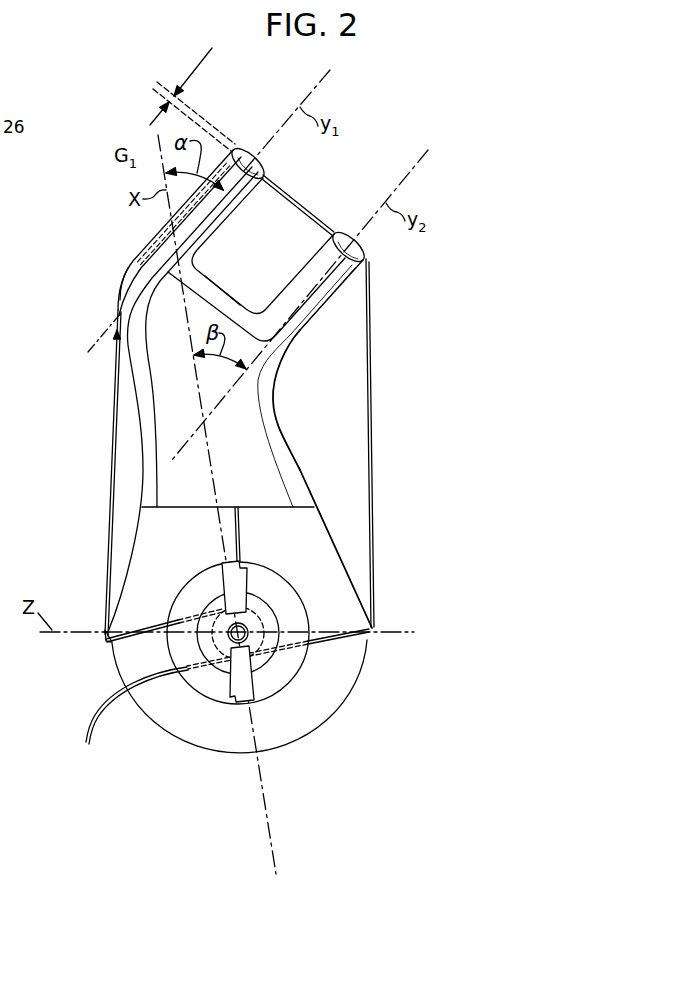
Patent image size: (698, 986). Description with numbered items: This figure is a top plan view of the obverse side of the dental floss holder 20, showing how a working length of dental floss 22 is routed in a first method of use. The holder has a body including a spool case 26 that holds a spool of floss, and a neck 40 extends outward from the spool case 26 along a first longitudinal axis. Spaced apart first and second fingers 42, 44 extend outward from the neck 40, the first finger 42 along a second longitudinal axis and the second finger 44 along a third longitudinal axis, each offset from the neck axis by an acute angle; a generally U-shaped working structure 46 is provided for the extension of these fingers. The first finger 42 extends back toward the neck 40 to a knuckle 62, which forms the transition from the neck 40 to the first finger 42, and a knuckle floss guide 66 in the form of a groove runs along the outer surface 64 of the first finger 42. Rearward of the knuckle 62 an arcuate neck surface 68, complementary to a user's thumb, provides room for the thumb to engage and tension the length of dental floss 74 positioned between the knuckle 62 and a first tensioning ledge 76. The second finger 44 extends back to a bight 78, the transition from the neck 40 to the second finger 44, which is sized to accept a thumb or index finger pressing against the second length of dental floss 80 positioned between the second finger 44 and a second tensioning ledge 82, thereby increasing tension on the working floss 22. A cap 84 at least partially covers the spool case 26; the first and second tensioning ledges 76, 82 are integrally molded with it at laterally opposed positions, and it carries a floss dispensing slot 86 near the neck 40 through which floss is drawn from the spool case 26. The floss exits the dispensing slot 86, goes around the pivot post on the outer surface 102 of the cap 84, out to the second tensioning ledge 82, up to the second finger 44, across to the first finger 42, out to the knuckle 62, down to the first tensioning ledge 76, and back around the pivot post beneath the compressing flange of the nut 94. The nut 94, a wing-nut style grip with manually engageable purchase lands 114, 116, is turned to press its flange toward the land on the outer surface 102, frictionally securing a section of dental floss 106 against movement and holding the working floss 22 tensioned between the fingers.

The dental floss holder 20 is at (70, 415).
The dental floss 22 is at (287, 193).
The spool case 26 is at (197, 755).
The neck 40 is at (181, 344).
The first finger 42 is at (226, 227).
The second finger 44 is at (333, 293).
The U-shaped working structure 46 is at (225, 292).
The knuckle 62 is at (117, 306).
The outer surface of first finger 64 is at (163, 238).
The knuckle floss guide 66 is at (148, 265).
The arcuate neck surface 68 is at (137, 437).
The length of dental floss 74 is at (111, 468).
The first tensioning ledge 76 is at (103, 642).
The bight 78 is at (273, 390).
The second length of dental floss 80 is at (369, 447).
The second tensioning ledge 82 is at (372, 636).
The cap 84 is at (337, 712).
The floss dispensing slot 86 is at (260, 504).
The nut 94 is at (215, 682).
The outer surface of cap 102 is at (341, 692).
The section of dental floss 106 is at (265, 613).
The purchase land 114 is at (258, 692).
The purchase land 116 is at (247, 567).